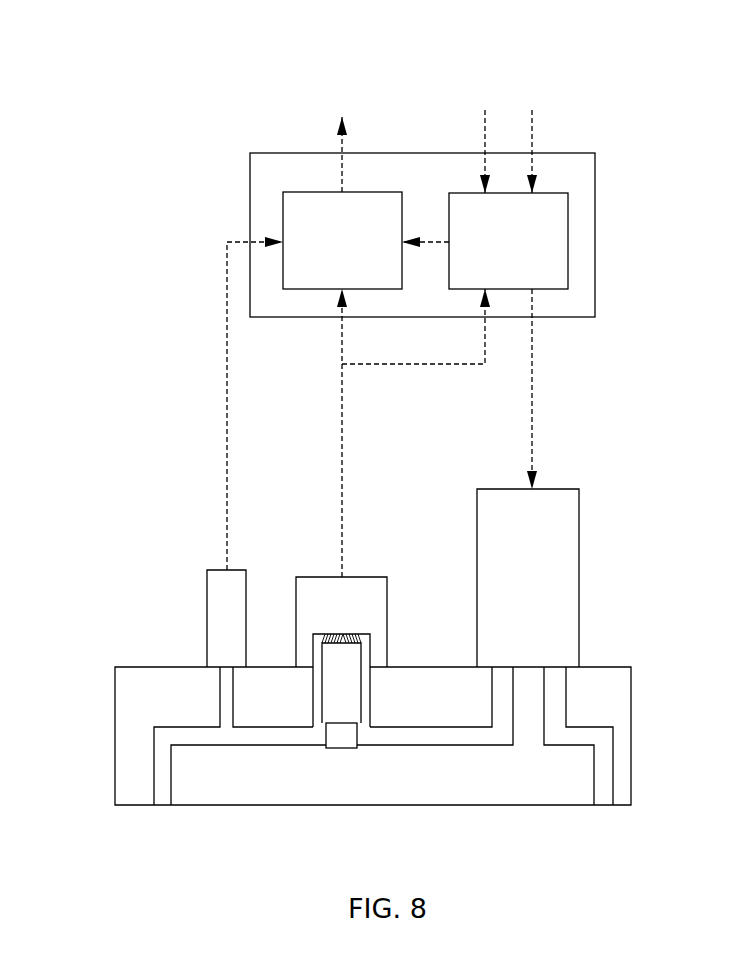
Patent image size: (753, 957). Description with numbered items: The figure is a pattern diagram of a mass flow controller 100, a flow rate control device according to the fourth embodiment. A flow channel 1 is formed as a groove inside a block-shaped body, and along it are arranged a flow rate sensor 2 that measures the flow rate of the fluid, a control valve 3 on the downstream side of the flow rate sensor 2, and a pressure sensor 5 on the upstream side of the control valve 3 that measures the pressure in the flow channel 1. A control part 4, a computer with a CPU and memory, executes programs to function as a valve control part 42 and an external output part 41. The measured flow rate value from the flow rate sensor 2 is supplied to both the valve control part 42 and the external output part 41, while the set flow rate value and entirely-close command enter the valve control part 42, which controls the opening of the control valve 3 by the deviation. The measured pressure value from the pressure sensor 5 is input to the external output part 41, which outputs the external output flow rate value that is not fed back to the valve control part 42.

The mass flow controller 100 is at (110, 70).
The flow channel 1 is at (187, 727).
The flow rate sensor 2 is at (297, 565).
The control valve 3 is at (579, 518).
The control part 4 is at (250, 217).
The external output part 41 is at (283, 250).
The valve control part 42 is at (568, 215).
The pressure sensor 5 is at (213, 570).